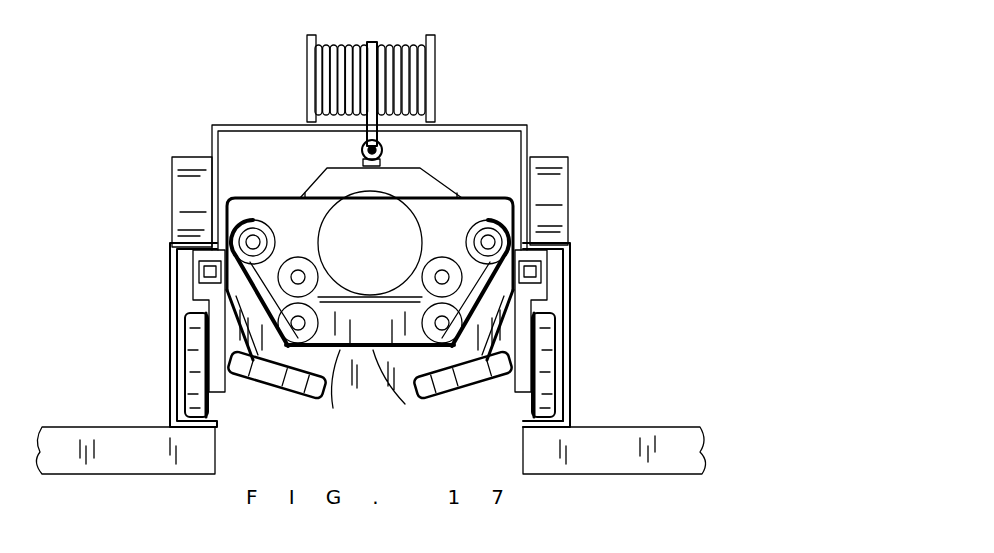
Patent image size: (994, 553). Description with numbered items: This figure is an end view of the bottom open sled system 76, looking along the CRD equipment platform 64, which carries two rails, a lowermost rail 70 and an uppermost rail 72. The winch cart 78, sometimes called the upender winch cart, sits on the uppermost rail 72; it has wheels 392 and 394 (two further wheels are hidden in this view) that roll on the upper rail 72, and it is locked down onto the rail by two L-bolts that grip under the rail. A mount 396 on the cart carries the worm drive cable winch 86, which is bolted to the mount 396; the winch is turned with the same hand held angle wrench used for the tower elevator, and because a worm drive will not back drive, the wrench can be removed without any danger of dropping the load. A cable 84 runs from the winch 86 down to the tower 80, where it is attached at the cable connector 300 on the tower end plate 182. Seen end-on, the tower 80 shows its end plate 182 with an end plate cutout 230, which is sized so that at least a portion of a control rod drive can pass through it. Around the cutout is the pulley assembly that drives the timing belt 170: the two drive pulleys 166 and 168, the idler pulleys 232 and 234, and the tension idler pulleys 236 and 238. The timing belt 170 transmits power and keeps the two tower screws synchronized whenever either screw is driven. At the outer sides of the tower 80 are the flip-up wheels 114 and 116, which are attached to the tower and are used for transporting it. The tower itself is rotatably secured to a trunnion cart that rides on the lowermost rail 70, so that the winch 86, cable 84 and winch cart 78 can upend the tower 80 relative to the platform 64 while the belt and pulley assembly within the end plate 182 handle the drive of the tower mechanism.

The CRD equipment platform 64 is at (612, 475).
The lowermost rail 70 is at (523, 425).
The uppermost rail 72 is at (571, 251).
The bottom open sled system 76 is at (520, 75).
The winch cart 78 is at (503, 116).
The tower 80 is at (529, 157).
The cable 84 is at (371, 44).
The winch 86 is at (437, 58).
The flip-up wheel 114 is at (199, 358).
The flip-up wheel 116 is at (544, 357).
The drive pulley 166 is at (243, 241).
The drive pulley 168 is at (514, 223).
The timing belt 170 is at (384, 365).
The end plate 182 is at (450, 186).
The end plate cutout 230 is at (397, 198).
The idler pulley 232 is at (351, 372).
The idler pulley 234 is at (405, 398).
The tension idler pulley 236 is at (298, 258).
The tension idler pulley 238 is at (435, 262).
The cable connector 300 is at (360, 153).
The winch cart wheel 392 is at (174, 195).
The winch cart wheel 394 is at (570, 178).
The mount 396 is at (253, 124).